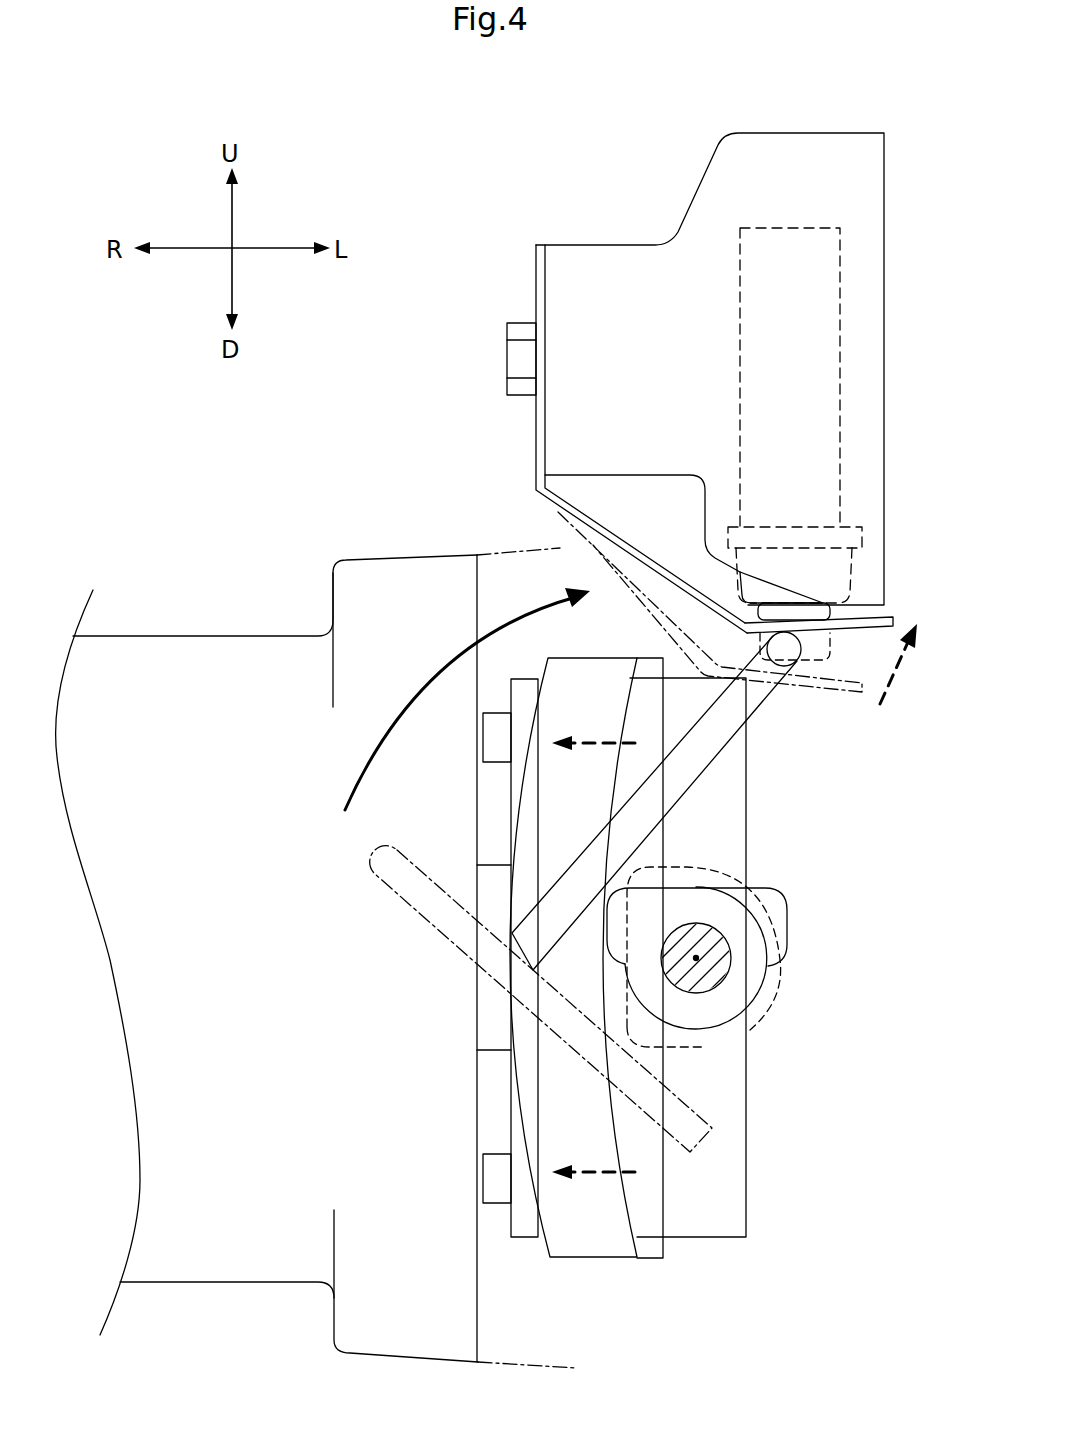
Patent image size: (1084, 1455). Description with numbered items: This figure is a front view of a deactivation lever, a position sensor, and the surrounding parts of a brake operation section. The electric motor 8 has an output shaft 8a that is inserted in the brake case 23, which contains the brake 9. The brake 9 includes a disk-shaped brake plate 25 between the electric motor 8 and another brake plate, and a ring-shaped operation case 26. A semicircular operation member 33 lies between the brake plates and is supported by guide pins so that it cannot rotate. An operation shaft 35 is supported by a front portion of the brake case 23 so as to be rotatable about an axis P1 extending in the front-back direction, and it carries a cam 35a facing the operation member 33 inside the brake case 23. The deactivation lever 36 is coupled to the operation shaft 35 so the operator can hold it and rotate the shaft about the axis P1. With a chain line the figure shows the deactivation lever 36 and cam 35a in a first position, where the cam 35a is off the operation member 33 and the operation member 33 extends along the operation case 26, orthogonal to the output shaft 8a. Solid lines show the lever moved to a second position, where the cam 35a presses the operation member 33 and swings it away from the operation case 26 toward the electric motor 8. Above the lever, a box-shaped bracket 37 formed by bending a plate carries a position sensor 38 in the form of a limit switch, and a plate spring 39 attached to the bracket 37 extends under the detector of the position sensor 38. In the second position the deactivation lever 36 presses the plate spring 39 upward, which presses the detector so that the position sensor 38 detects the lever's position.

The electric motor 8 is at (235, 640).
The output shaft 8a is at (497, 1045).
The brake 9 is at (583, 1268).
The brake case 23 is at (500, 545).
The brake plate 25 is at (524, 1240).
The operation case 26 is at (746, 1122).
The operation member 33 is at (540, 782).
The operation shaft 35 is at (713, 938).
The cam 35a is at (693, 868).
The deactivation lever 36 is at (780, 695).
The bracket 37 is at (602, 285).
The position sensor 38 is at (742, 585).
The plate spring 39 is at (900, 620).
The axis P1 is at (696, 958).